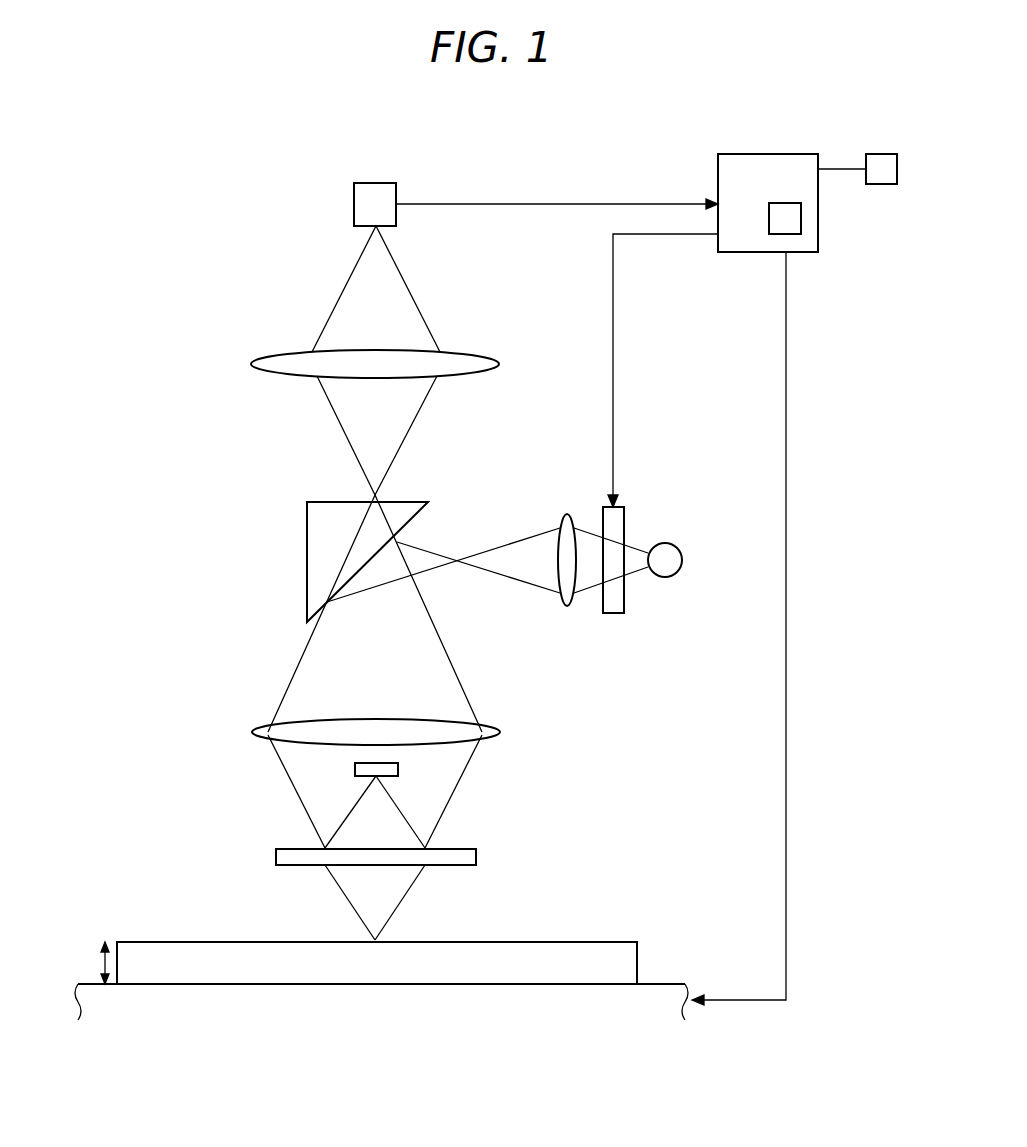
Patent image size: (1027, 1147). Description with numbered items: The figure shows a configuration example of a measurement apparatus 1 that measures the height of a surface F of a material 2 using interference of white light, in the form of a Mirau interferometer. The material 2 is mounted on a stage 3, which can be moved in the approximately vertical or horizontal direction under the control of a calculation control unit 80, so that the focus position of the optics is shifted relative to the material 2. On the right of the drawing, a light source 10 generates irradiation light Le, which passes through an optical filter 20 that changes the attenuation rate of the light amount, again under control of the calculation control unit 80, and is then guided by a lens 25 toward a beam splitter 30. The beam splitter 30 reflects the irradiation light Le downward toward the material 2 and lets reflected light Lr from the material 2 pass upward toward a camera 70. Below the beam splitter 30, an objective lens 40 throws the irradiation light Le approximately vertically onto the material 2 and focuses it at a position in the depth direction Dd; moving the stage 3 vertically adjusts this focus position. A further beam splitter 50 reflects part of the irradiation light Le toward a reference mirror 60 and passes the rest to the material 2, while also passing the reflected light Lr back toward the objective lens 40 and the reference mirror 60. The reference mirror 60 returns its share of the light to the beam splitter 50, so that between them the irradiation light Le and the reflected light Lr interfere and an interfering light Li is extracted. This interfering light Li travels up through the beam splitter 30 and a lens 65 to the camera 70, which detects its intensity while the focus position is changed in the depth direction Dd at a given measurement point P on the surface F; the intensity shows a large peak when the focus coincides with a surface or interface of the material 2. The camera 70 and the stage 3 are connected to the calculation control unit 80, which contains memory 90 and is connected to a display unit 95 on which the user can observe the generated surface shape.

The measurement apparatus 1 is at (435, 1063).
The material 2 is at (157, 942).
The stage 3 is at (663, 984).
The light source 10 is at (665, 543).
The optical filter 20 is at (613, 613).
The lens 25 is at (567, 514).
The beam splitter 30 is at (307, 545).
The objective lens 40 is at (253, 733).
The beam splitter 50 is at (276, 858).
The reference mirror 60 is at (355, 770).
The lens 65 is at (252, 365).
The camera 70 is at (354, 207).
The calculation control unit 80 is at (767, 154).
The memory 90 is at (801, 222).
The display unit 95 is at (882, 154).
The interfering light Li is at (413, 416).
The irradiation light Le is at (505, 545).
The reflected light Lr is at (405, 815).
The measurement point P is at (395, 929).
The surface F is at (547, 928).
The depth direction Dd is at (85, 963).